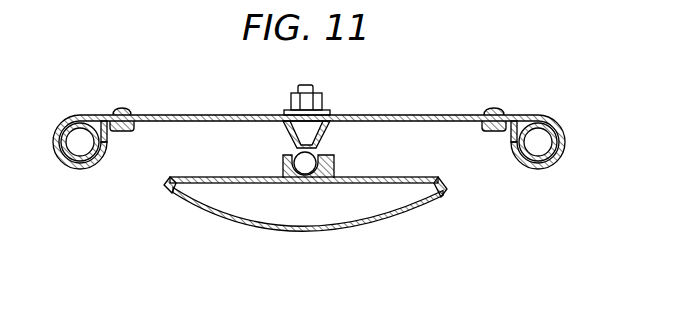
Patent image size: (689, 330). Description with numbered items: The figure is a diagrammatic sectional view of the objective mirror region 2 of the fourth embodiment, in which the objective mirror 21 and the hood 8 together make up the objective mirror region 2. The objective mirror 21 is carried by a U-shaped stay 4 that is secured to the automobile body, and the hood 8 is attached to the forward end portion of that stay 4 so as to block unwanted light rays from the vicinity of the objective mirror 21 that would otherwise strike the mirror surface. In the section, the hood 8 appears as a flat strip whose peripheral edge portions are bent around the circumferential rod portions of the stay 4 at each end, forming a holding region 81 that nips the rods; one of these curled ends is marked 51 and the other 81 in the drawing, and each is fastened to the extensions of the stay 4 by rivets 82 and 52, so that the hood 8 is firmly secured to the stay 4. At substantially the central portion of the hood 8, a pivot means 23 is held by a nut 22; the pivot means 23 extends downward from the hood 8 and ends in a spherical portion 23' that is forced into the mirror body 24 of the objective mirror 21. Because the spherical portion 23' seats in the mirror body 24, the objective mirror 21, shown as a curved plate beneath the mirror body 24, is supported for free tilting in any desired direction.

The objective mirror region 2 is at (216, 113).
The hood 8 is at (415, 113).
The U-shaped stay 4 is at (98, 161).
The curled end 51 is at (80, 169).
The holding region 81 is at (555, 120).
The rivet 52 is at (122, 109).
The rivets 82 is at (493, 108).
The nut 22 is at (314, 88).
The pivot means 23 is at (349, 147).
The spherical portion 23' is at (331, 166).
The mirror body 24 is at (243, 177).
The objective mirror 21 is at (370, 226).